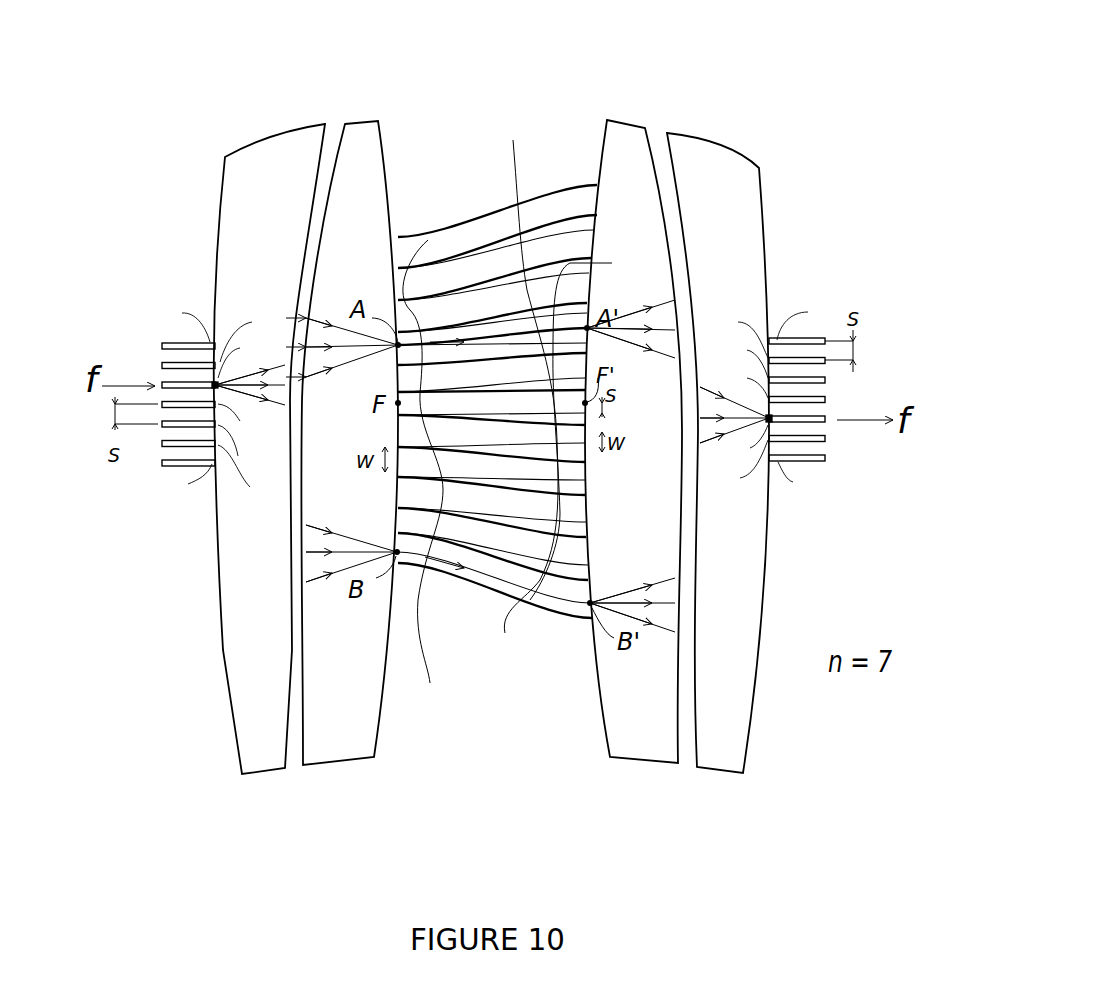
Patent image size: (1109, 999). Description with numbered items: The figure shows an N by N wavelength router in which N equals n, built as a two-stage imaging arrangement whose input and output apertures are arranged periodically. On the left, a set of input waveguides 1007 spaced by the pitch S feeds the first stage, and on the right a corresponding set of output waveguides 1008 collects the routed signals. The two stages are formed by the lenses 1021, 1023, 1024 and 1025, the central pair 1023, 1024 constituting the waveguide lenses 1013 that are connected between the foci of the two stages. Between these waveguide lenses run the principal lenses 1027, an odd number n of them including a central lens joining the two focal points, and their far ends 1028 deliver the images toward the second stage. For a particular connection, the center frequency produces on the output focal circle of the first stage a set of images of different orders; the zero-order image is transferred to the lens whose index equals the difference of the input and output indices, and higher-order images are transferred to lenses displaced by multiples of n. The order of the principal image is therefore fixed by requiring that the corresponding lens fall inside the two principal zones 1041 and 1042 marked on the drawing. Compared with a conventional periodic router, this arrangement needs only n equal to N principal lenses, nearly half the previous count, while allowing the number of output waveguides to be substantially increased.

The waveguide lenses 1013 is at (595, 66).
The first lens 1021 is at (225, 683).
The second lens (waveguide lens) 1023 is at (380, 732).
The third lens (waveguide lens) 1024 is at (598, 697).
The fourth lens 1025 is at (760, 672).
The input waveguides 1007 is at (175, 346).
The output waveguides 1008 is at (820, 460).
The waveguides of the waveguide lens array 1027 is at (428, 240).
The waveguide end region 1028 is at (580, 283).
The principal zone 1041 is at (441, 499).
The principal zone 1042 is at (518, 353).